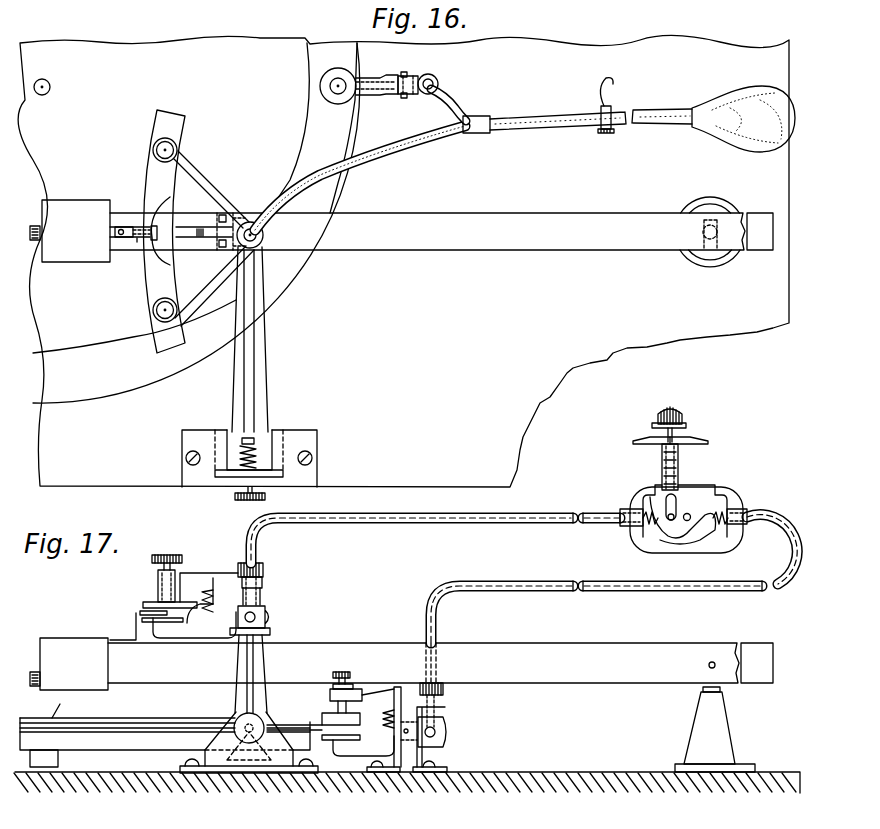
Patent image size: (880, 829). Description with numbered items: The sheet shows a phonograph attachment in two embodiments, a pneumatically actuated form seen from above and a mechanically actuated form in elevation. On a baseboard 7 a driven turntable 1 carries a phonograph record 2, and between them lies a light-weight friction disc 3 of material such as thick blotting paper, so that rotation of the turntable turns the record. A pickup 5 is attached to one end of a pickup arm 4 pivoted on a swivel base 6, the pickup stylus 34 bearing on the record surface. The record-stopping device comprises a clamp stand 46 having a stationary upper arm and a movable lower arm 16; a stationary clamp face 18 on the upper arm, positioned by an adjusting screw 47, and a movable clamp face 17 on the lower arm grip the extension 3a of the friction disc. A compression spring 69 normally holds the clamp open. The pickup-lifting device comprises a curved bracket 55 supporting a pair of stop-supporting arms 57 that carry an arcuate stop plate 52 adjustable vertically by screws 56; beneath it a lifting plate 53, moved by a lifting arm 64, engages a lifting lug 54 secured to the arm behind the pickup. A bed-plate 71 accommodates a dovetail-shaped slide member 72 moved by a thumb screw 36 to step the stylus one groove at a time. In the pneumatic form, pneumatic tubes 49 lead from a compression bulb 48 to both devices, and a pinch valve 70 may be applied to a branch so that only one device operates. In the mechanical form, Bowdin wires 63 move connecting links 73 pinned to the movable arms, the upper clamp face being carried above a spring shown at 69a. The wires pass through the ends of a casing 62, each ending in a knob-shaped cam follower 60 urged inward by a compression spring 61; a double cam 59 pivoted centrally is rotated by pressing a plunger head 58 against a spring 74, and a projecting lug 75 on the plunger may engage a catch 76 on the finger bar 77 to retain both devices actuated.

In FIG. 17, the turntable 1 is at (105, 742).
In FIG. 16, the phonograph record 2 is at (90, 340).
In FIG. 17, the phonograph record 2 is at (118, 720).
In FIG. 17, the friction disc 3 is at (152, 726).
In FIG. 16, the extension of friction disc 3a is at (337, 183).
In FIG. 17, the extension of friction disc 3a is at (300, 722).
In FIG. 16, the pickup arm 4 is at (583, 215).
In FIG. 17, the pickup arm 4 is at (617, 650).
In FIG. 16, the pickup 5 is at (82, 208).
In FIG. 17, the pickup 5 is at (73, 643).
In FIG. 16, the swivel base 6 is at (705, 205).
In FIG. 17, the swivel base 6 is at (700, 708).
In FIG. 17, the baseboard 7 is at (565, 783).
In FIG. 17, the movable lower arm 16 is at (187, 623).
In FIG. 17, the movable clamp face 17 is at (327, 741).
In FIG. 16, the stationary clamp face 18 is at (347, 103).
In FIG. 17, the stationary clamp face 18 is at (326, 716).
In FIG. 17, the pickup stylus 34 is at (66, 707).
In FIG. 16, the thumb screw 36 is at (235, 496).
In FIG. 17, the thumb screw 36 is at (246, 742).
In FIG. 16, the clamp stand 46 is at (432, 75).
In FIG. 17, the clamp stand 46 is at (402, 686).
In FIG. 16, the adjusting screw 47 is at (344, 80).
In FIG. 17, the adjusting screw 47 is at (340, 673).
In FIG. 16, the compression bulb 48 is at (747, 97).
In FIG. 16, the pneumatic tube 49 is at (462, 103).
In FIG. 16, the stop plate 52 is at (148, 172).
In FIG. 17, the stop plate 52 is at (150, 600).
In FIG. 16, the lifting plate 53 is at (170, 258).
In FIG. 17, the lifting plate 53 is at (140, 619).
In FIG. 16, the lifting lug 54 is at (137, 238).
In FIG. 17, the lifting lug 54 is at (138, 609).
In FIG. 16, the curved bracket 55 is at (262, 378).
In FIG. 17, the curved bracket 55 is at (245, 697).
In FIG. 16, the screws 56 is at (153, 142).
In FIG. 17, the screws 56 is at (173, 557).
In FIG. 16, the stop-supporting arms 57 is at (208, 182).
In FIG. 17, the stop-supporting arms 57 is at (197, 573).
In FIG. 17, the plunger head 58 is at (680, 410).
In FIG. 17, the double cam 59 is at (686, 512).
In FIG. 17, the cam follower 60 is at (658, 513).
In FIG. 17, the compression spring 61 is at (658, 527).
In FIG. 17, the frame or casing 62 is at (737, 543).
In FIG. 17, the Bowdin wires 63 is at (541, 515).
In FIG. 16, the lifting arm 64 is at (188, 228).
In FIG. 17, the lifting arm 64 is at (179, 634).
In FIG. 17, the compression spring 69 is at (205, 592).
In FIG. 17, the spring 69a is at (387, 710).
In FIG. 16, the pinch valve or clamp 70 is at (614, 101).
In FIG. 16, the bed-plate 71 is at (288, 432).
In FIG. 17, the bed-plate 71 is at (288, 768).
In FIG. 16, the dovetail-shaped slide member 72 is at (222, 430).
In FIG. 17, the dovetail-shaped slide member 72 is at (259, 762).
In FIG. 17, the connecting links 73 is at (262, 609).
In FIG. 17, the spring 74 is at (662, 452).
In FIG. 17, the projecting lug 75 is at (655, 423).
In FIG. 17, the catch 76 is at (653, 433).
In FIG. 17, the finger bar 77 is at (695, 440).